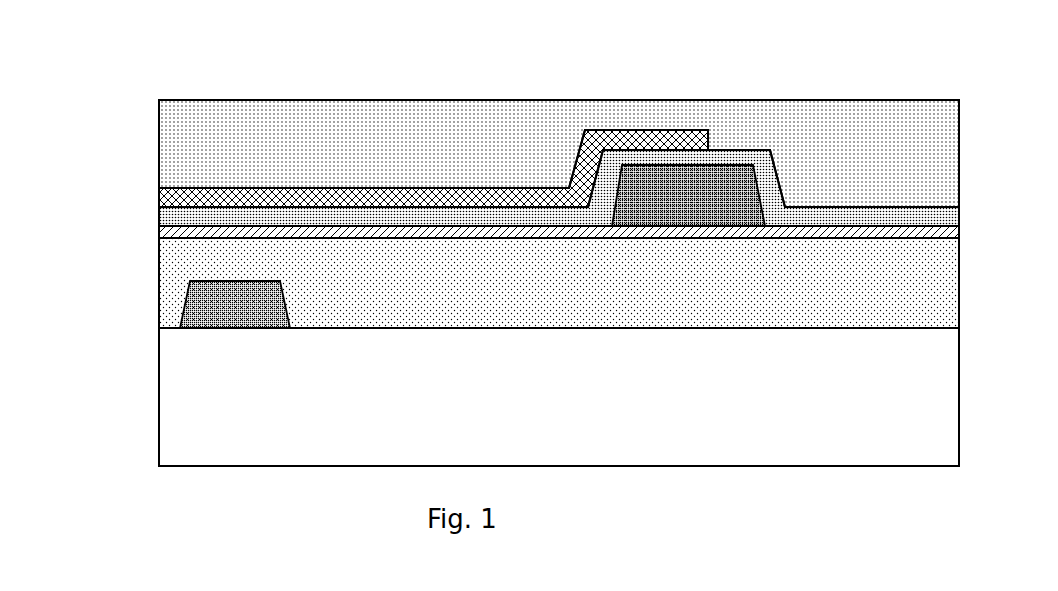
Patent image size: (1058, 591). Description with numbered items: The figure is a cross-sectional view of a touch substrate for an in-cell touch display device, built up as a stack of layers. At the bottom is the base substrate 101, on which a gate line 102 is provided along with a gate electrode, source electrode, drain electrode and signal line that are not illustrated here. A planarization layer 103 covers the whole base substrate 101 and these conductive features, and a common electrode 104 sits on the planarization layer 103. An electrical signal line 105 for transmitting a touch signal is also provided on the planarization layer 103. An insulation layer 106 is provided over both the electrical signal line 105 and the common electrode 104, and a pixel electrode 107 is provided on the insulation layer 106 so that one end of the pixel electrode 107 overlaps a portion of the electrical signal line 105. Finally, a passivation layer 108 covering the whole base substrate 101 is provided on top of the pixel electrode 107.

The base substrate 101 is at (167, 402).
The gate line 102 is at (182, 320).
The planarization layer 103 is at (168, 232).
The common electrode 104 is at (168, 222).
The electrical signal line 105 is at (725, 175).
The insulation layer 106 is at (159, 205).
The pixel electrode 107 is at (602, 147).
The passivation layer 108 is at (213, 110).